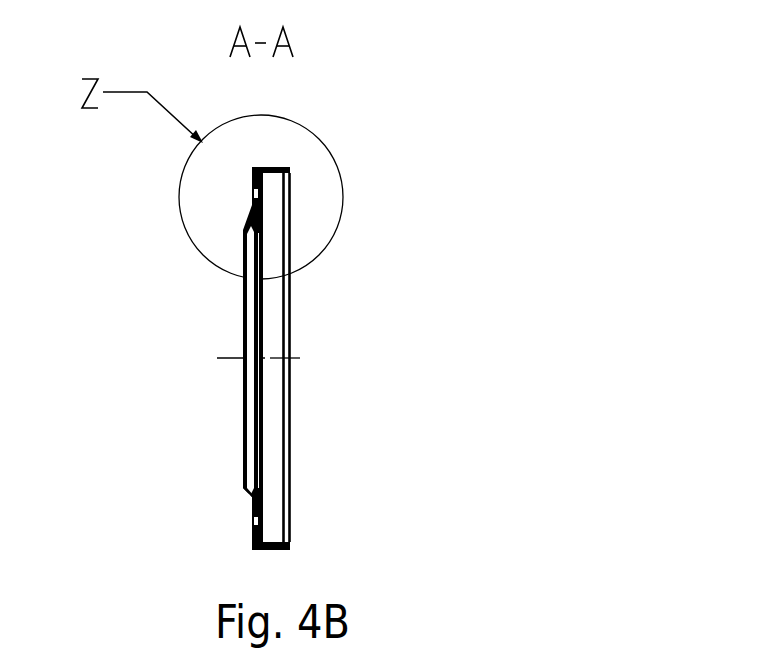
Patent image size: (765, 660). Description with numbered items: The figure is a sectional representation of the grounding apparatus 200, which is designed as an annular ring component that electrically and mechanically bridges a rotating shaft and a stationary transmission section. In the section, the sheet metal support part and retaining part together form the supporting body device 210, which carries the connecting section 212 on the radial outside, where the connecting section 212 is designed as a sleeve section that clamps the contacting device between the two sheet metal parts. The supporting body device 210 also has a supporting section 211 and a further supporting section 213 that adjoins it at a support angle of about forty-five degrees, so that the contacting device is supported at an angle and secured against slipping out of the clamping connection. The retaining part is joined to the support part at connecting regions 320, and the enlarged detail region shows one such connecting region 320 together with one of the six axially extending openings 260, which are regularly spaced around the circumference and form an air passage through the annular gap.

The grounding apparatus 200 is at (512, 199).
The supporting body device 210 is at (282, 538).
The supporting section 211 is at (253, 512).
The connecting section 212 is at (255, 551).
The supporting section 213 is at (246, 488).
The opening 260 is at (154, 179).
The connecting region 320 is at (251, 192).